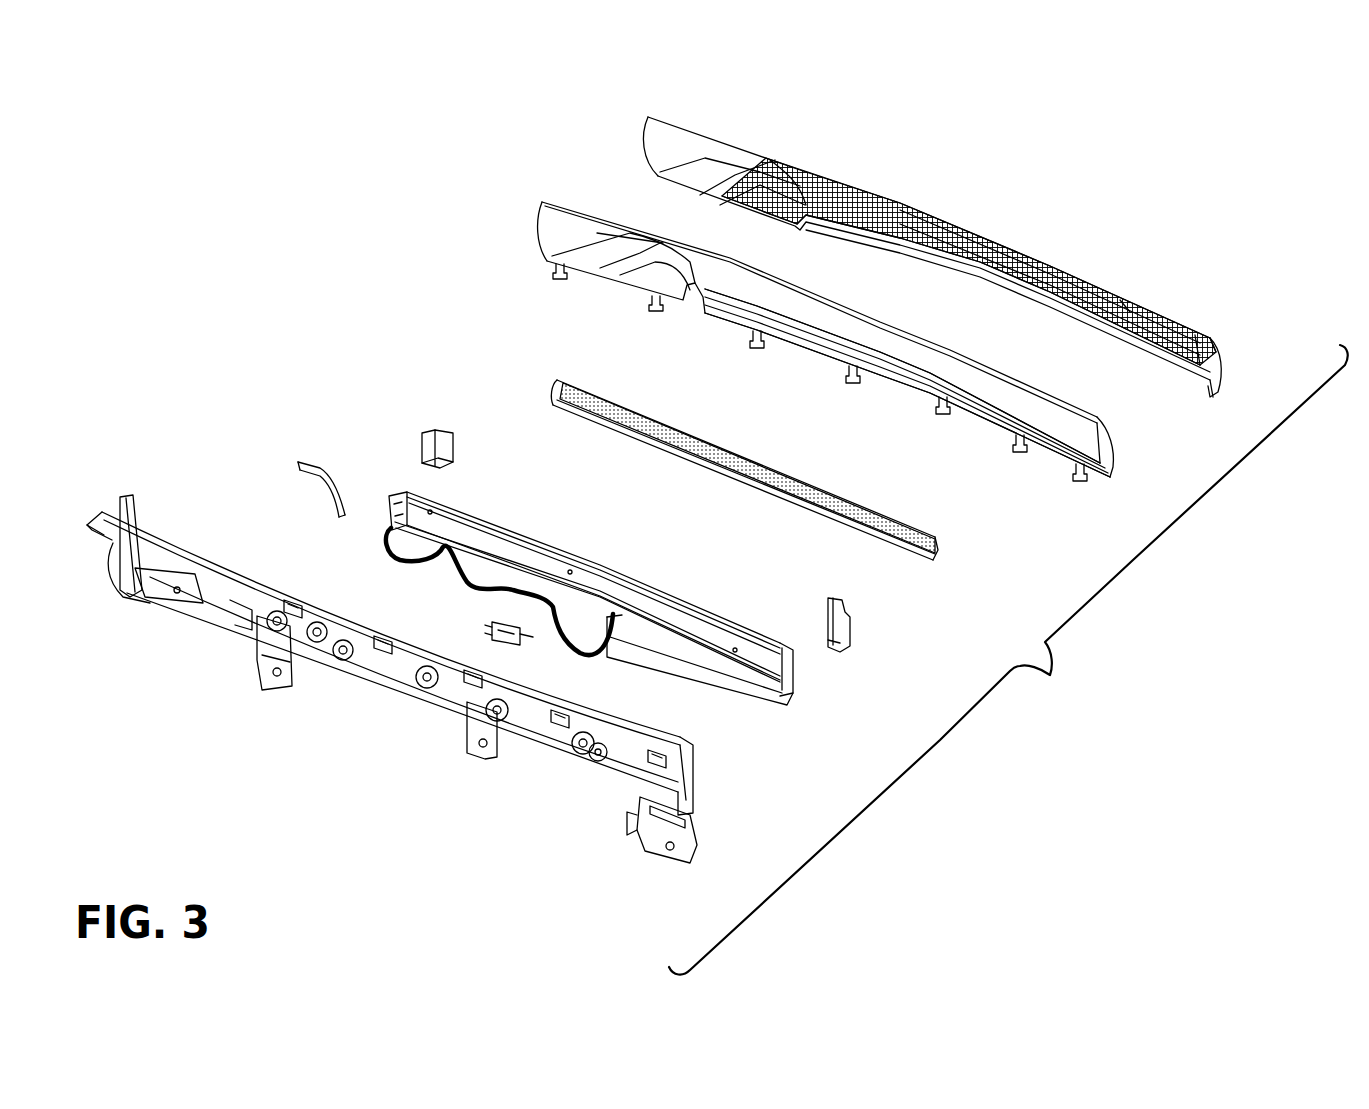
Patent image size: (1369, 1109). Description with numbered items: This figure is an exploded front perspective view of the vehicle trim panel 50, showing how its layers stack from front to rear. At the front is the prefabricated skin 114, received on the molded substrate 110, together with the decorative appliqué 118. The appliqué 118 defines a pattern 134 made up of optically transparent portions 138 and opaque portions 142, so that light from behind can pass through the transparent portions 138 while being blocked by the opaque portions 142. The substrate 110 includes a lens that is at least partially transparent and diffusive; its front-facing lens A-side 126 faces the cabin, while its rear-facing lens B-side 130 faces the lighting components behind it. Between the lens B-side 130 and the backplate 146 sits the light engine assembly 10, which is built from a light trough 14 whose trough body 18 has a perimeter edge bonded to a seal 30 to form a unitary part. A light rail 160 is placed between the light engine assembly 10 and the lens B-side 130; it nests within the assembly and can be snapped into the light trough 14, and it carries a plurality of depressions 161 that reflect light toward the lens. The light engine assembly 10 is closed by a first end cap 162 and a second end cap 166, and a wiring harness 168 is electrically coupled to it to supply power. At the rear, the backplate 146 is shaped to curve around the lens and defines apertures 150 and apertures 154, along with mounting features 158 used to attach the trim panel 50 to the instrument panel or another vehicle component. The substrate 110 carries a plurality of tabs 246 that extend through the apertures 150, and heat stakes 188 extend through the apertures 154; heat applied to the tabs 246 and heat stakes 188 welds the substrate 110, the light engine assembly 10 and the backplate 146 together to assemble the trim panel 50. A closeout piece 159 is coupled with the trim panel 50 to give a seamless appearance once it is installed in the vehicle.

The light engine assembly 10 is at (393, 488).
The light trough 14 is at (630, 563).
The trough body 18 is at (680, 618).
The seal 30 is at (553, 540).
The trim panel 50 is at (1008, 660).
The substrate 110 is at (533, 236).
The skin 114 is at (640, 140).
The appliqué 118 is at (877, 197).
The lens A-side 126 is at (1053, 413).
The lens B-side 130 is at (997, 428).
The pattern 134 is at (940, 237).
The optically transparent portions 138 is at (1123, 307).
The opaque portions 142 is at (1033, 270).
The backplate 146 is at (90, 508).
The apertures 150 is at (298, 600).
The apertures 154 is at (423, 687).
The mounting features 158 is at (250, 672).
The closeout piece 159 is at (310, 457).
The light rail 160 is at (545, 381).
The depressions 161 is at (692, 440).
The first end cap 162 is at (446, 430).
The second end cap 166 is at (845, 624).
The wiring harness 168 is at (620, 657).
The heat stakes 188 is at (507, 557).
The tabs 246 is at (757, 340).